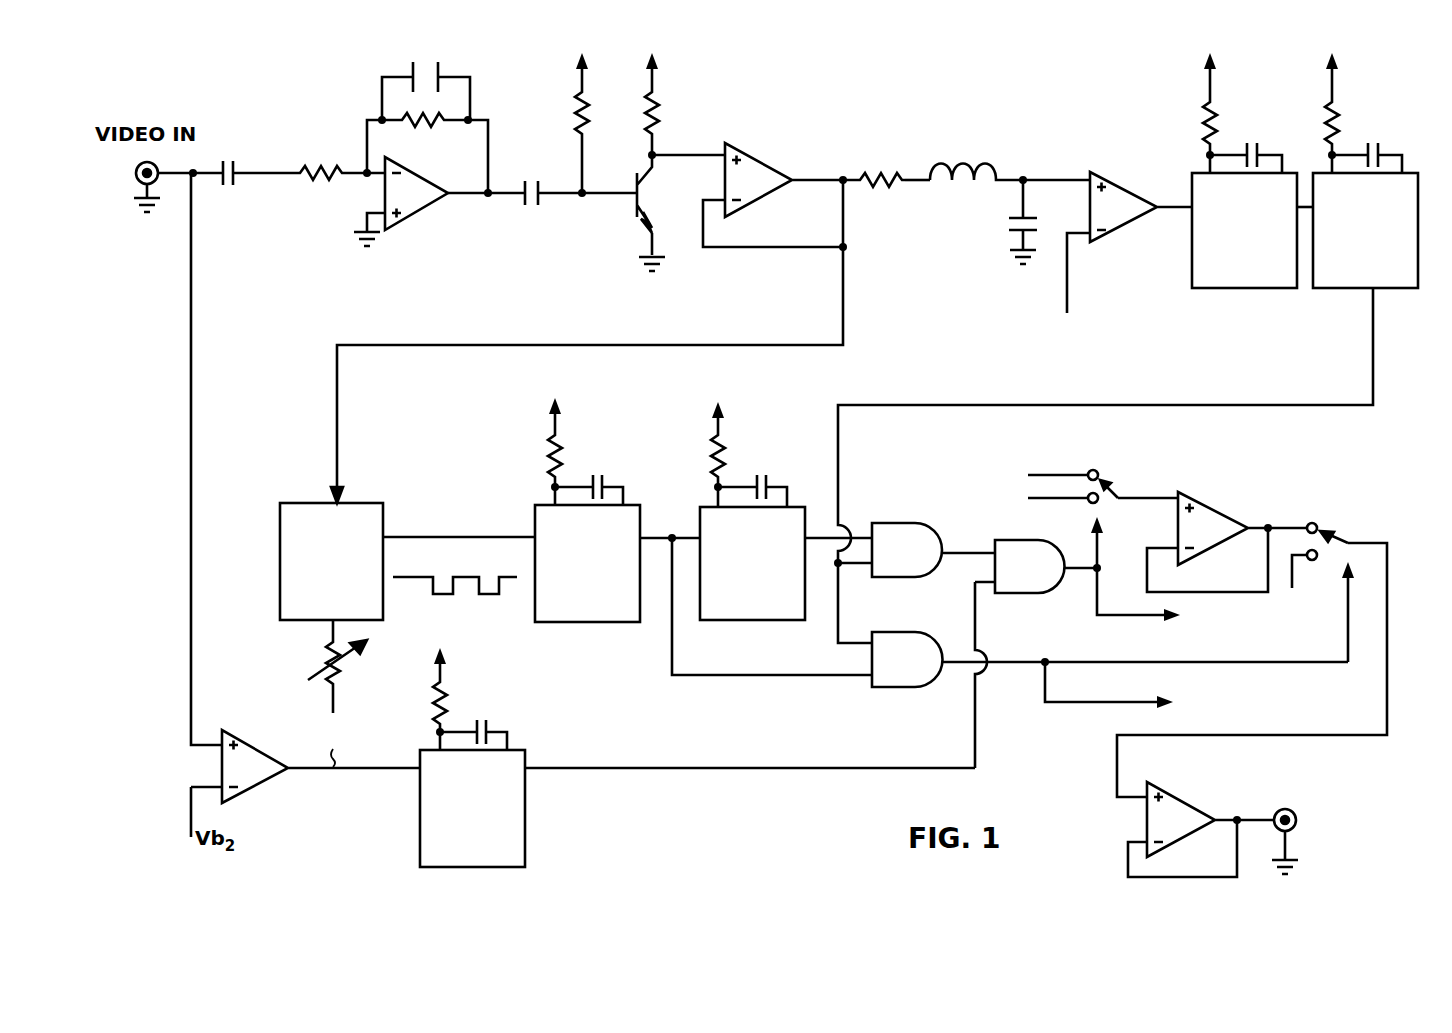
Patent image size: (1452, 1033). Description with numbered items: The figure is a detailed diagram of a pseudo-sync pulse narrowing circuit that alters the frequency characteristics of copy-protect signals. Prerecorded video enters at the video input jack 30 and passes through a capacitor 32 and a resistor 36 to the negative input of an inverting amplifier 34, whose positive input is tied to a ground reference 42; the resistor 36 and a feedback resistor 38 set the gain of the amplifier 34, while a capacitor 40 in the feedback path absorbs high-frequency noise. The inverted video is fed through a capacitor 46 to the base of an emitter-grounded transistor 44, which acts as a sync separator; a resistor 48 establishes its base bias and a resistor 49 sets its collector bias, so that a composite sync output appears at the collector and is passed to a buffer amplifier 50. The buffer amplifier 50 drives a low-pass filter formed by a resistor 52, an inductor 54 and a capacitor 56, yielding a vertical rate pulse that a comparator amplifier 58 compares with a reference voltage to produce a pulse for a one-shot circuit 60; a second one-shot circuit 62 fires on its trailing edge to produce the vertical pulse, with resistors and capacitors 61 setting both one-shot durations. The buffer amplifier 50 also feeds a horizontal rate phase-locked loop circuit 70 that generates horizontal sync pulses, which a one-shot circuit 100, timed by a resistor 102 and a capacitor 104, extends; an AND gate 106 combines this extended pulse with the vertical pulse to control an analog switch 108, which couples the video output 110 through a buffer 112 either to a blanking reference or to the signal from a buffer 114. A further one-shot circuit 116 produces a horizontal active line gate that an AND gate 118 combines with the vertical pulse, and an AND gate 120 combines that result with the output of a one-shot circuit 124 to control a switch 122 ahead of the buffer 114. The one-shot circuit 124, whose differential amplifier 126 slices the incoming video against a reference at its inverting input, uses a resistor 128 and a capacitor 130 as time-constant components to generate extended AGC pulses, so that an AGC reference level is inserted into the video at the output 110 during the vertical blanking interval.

The video input jack 30 is at (136, 173).
The capacitor 32 is at (220, 189).
The inverting amplifier 34 is at (413, 218).
The resistor 36 is at (325, 170).
The resistor 38 is at (434, 107).
The capacitor 40 is at (438, 65).
The ground reference 42 is at (363, 230).
The emitter-grounded transistor 44 is at (634, 224).
The capacitor 46 is at (536, 179).
The resistor 48 is at (574, 92).
The resistor 49 is at (658, 94).
The buffer amplifier 50 is at (748, 144).
The resistor 52 is at (874, 176).
The inductor 54 is at (962, 168).
The capacitor 56 is at (1012, 223).
The comparator amplifier 58 is at (1112, 170).
The one-shot circuit 60 is at (1245, 288).
The resistors and capacitors 61 is at (1368, 143).
The second one-shot circuit 62 is at (1338, 288).
The phase-locked loop circuit 70 is at (294, 500).
The one-shot circuit 100 is at (557, 622).
The resistor 102 is at (548, 465).
The capacitor 104 is at (602, 476).
The AND gate 106 is at (924, 634).
The analog switch 108 is at (1346, 532).
The video output 110 is at (1282, 807).
The buffer 112 is at (1196, 804).
The buffer 114 is at (1218, 494).
The one-shot circuit 116 is at (722, 620).
The AND gate 118 is at (924, 524).
The AND gate 120 is at (1002, 546).
The switch 122 is at (1122, 492).
The one-shot circuit 124 is at (525, 848).
The differential amplifier 126 is at (232, 730).
The resistor 128 is at (444, 682).
The capacitor 130 is at (482, 722).